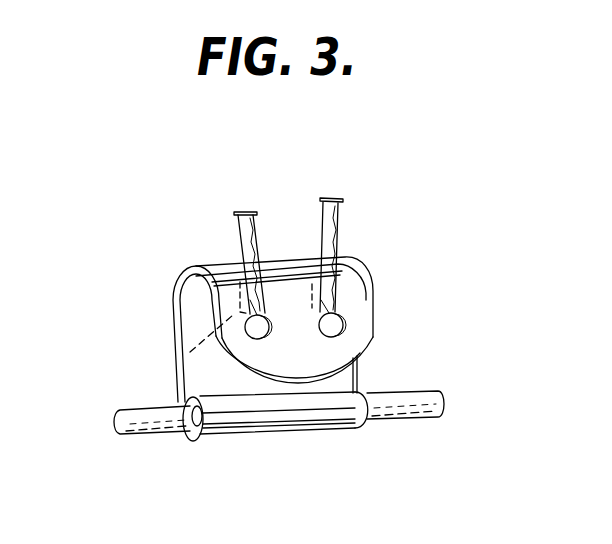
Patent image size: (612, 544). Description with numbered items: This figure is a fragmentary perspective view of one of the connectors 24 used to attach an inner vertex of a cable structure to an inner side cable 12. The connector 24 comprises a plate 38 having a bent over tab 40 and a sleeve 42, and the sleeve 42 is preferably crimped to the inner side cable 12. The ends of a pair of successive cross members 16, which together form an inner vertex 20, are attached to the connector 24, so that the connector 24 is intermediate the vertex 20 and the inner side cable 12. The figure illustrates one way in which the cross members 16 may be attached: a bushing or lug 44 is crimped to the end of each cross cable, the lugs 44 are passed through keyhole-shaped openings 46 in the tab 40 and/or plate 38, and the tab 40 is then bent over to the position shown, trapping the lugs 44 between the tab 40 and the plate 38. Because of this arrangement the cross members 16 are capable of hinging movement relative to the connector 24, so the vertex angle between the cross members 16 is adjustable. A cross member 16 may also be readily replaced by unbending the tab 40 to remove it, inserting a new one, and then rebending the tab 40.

The inner side cable 12 is at (388, 421).
The cross members 16 is at (239, 233).
The inner vertex 20 is at (291, 188).
The connector 24 is at (404, 293).
The plate 38 is at (172, 315).
The bent over tab 40 is at (284, 374).
The sleeve 42 is at (302, 428).
The bushing or lug 44 is at (177, 360).
The keyhole-shaped openings 46 is at (316, 313).